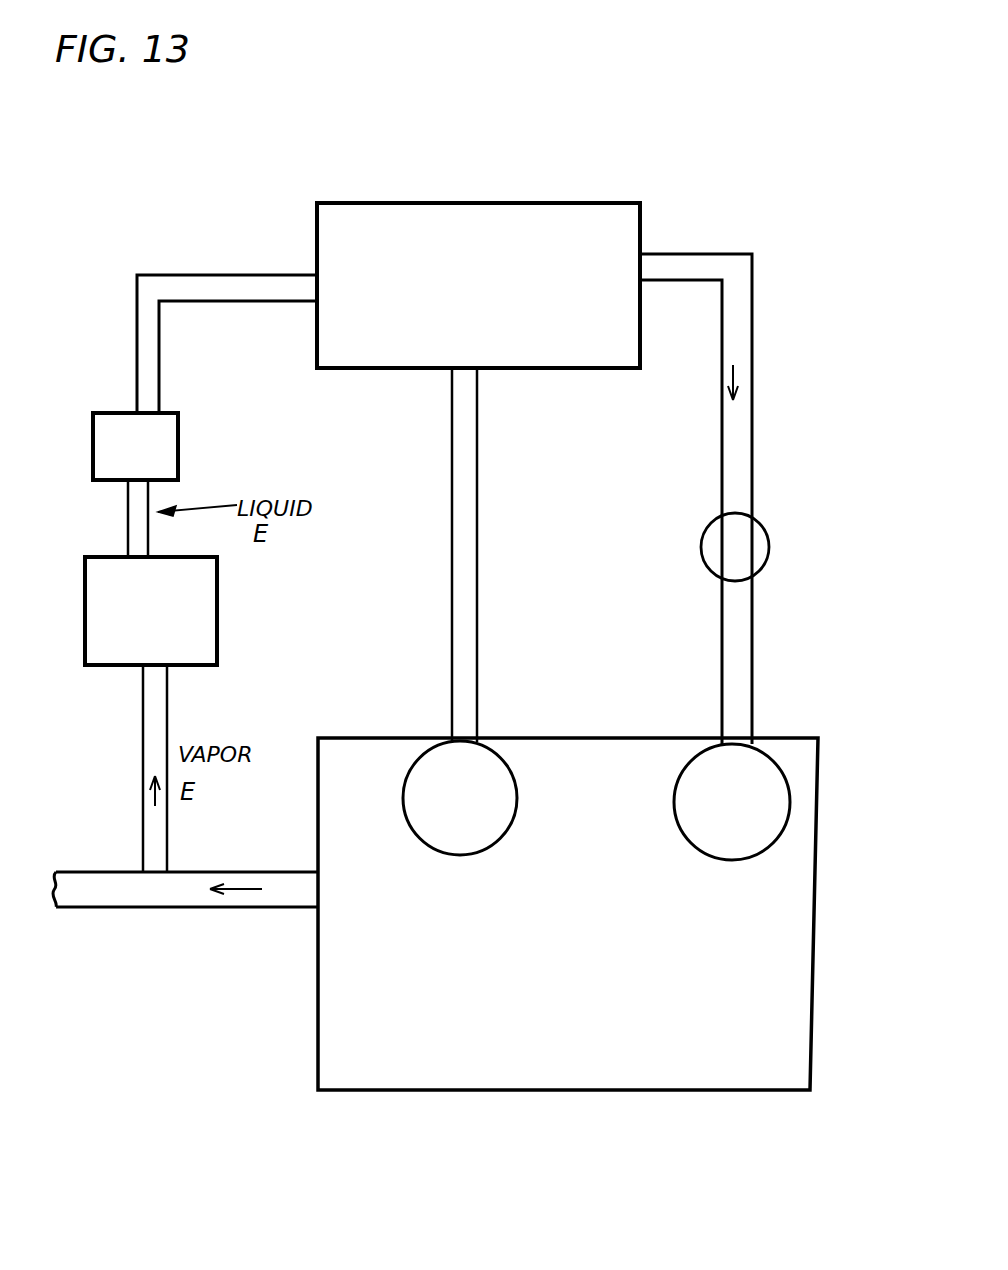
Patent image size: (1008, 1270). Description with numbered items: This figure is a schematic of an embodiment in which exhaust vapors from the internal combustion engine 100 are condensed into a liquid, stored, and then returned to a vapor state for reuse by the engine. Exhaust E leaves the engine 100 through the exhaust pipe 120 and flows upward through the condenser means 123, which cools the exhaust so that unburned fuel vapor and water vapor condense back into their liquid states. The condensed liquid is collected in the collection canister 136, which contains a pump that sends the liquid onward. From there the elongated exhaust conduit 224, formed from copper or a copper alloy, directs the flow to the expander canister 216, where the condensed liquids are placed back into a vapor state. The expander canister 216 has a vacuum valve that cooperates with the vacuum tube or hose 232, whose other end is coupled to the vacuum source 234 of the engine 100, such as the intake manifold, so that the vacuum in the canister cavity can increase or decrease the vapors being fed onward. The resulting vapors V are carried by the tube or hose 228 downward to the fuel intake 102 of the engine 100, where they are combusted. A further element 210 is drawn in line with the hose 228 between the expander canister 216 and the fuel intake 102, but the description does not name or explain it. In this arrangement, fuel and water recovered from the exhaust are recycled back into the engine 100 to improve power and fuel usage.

The expander canister 216 is at (488, 203).
The elongated exhaust conduit 224 is at (160, 368).
The collection canister 136 is at (135, 446).
The condenser means 123 is at (151, 611).
The exhaust pipe 120 is at (160, 907).
The vacuum tube or hose 232 is at (478, 538).
The tube or hose 228 is at (752, 472).
The valve 210 is at (757, 548).
The engine 100 is at (588, 931).
The vacuum source 234 is at (494, 806).
The fuel intake 102 is at (764, 809).